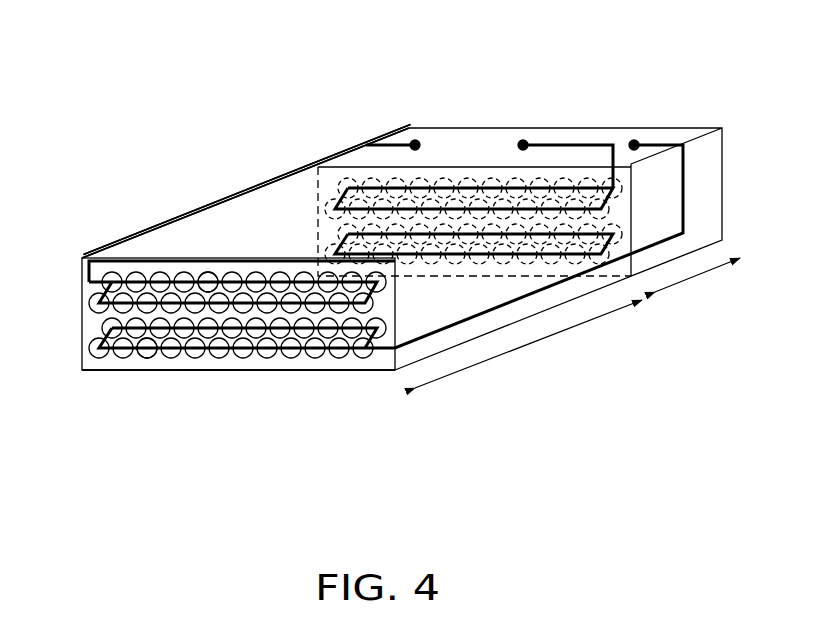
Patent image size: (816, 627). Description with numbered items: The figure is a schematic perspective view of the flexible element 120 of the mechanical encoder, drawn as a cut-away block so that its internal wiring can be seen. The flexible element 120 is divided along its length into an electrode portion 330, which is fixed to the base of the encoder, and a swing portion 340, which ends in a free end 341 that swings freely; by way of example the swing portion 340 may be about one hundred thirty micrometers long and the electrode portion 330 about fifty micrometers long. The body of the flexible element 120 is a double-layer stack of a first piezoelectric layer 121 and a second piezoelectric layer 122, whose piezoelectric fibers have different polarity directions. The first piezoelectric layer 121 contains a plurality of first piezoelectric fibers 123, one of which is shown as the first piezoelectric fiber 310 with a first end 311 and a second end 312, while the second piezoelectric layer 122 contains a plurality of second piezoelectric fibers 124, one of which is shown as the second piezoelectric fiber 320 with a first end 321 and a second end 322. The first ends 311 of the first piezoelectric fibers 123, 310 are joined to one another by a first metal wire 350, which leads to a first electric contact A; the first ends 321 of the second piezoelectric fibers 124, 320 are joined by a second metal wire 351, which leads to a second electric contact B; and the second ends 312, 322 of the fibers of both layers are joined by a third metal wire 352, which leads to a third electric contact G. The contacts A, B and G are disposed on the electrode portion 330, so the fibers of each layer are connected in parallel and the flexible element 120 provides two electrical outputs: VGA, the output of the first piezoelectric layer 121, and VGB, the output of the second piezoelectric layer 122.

The flexible element 120 is at (707, 451).
The first piezoelectric layer 121 is at (73, 260).
The second piezoelectric layer 122 is at (73, 316).
The first piezoelectric fibers 123 is at (207, 272).
The second piezoelectric fibers 124 is at (147, 358).
The first piezoelectric fiber 310 is at (245, 101).
The first end 311 is at (117, 280).
The second end 312 is at (337, 187).
The second piezoelectric fiber 320 is at (428, 450).
The first end 321 is at (365, 352).
The second end 322 is at (604, 280).
The electrode portion 330 is at (697, 286).
The swing portion 340 is at (528, 344).
The free end 341 is at (205, 372).
The first metal wire 350 is at (90, 265).
The second metal wire 351 is at (360, 328).
The third metal wire 352 is at (604, 206).
The first electric contact A is at (415, 145).
The third electric contact G is at (523, 145).
The second electric contact B is at (634, 145).
The electrical output VGA is at (622, 71).
The electrical output VGB is at (728, 71).